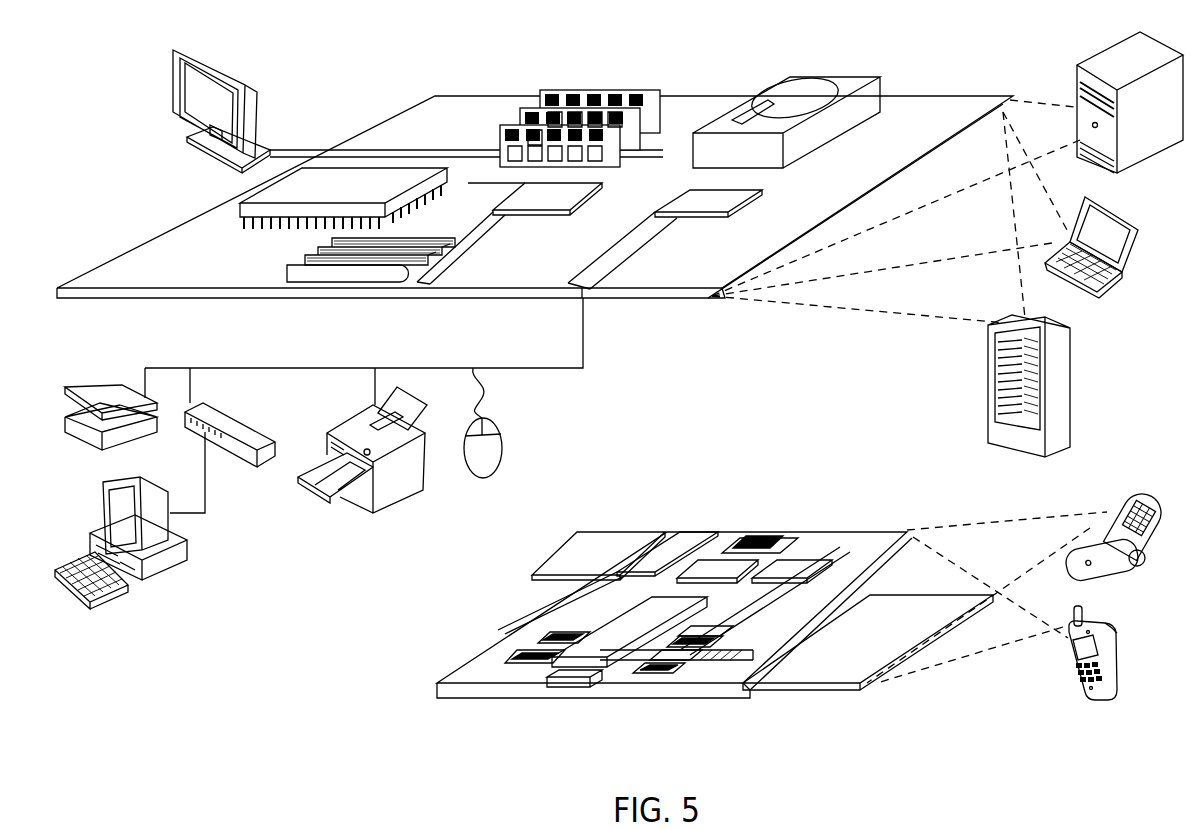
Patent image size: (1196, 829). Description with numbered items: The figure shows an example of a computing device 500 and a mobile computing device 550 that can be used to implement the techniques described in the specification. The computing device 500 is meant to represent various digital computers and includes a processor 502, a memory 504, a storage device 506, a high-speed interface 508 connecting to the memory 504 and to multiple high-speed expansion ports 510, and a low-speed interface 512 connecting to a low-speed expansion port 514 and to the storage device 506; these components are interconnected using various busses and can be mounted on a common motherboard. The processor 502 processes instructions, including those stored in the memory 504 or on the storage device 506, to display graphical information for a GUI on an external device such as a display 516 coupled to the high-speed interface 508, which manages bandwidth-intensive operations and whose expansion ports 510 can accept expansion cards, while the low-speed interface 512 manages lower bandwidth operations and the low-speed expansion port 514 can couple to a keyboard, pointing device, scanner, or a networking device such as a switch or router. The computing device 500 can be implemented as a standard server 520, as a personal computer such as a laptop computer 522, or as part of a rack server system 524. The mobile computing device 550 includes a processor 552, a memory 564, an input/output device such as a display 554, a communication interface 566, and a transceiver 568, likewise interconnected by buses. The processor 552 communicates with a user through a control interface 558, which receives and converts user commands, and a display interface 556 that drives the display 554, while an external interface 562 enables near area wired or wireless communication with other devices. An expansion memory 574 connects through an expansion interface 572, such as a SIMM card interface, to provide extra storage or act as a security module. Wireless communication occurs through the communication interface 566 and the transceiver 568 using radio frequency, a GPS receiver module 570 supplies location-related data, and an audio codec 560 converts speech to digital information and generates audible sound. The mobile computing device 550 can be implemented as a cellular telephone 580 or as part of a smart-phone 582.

The computing device 500 is at (356, 63).
The processor 502 is at (240, 210).
The memory 504 is at (550, 94).
The storage device 506 is at (767, 92).
The high-speed interface 508 is at (482, 186).
The high-speed expansion ports 510 is at (300, 260).
The low-speed interface 512 is at (688, 188).
The low-speed expansion port 514 is at (588, 290).
The display 516 is at (175, 50).
The standard server 520 is at (1078, 83).
The laptop computer 522 is at (1137, 226).
The rack server system 524 is at (990, 415).
The mobile computing device 550 is at (417, 688).
The processor 552 is at (605, 657).
The display 554 is at (830, 668).
The display interface 556 is at (668, 657).
The control interface 558 is at (720, 623).
The audio codec 560 is at (726, 650).
The external interface 562 is at (570, 688).
The memory 564 is at (520, 647).
The communication interface 566 is at (716, 568).
The transceiver 568 is at (792, 568).
The GPS receiver module 570 is at (766, 536).
The expansion interface 572 is at (653, 548).
The expansion memory 574 is at (583, 547).
The cellular telephone 580 is at (1120, 489).
The smart-phone 582 is at (1072, 660).